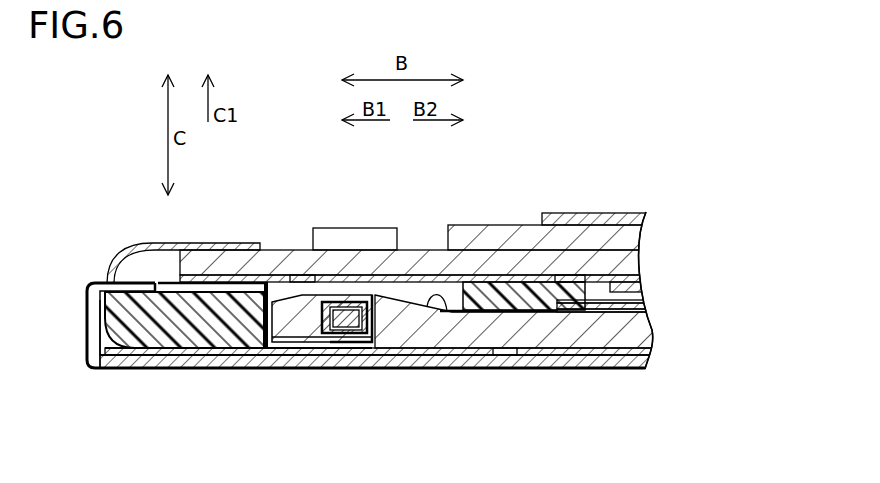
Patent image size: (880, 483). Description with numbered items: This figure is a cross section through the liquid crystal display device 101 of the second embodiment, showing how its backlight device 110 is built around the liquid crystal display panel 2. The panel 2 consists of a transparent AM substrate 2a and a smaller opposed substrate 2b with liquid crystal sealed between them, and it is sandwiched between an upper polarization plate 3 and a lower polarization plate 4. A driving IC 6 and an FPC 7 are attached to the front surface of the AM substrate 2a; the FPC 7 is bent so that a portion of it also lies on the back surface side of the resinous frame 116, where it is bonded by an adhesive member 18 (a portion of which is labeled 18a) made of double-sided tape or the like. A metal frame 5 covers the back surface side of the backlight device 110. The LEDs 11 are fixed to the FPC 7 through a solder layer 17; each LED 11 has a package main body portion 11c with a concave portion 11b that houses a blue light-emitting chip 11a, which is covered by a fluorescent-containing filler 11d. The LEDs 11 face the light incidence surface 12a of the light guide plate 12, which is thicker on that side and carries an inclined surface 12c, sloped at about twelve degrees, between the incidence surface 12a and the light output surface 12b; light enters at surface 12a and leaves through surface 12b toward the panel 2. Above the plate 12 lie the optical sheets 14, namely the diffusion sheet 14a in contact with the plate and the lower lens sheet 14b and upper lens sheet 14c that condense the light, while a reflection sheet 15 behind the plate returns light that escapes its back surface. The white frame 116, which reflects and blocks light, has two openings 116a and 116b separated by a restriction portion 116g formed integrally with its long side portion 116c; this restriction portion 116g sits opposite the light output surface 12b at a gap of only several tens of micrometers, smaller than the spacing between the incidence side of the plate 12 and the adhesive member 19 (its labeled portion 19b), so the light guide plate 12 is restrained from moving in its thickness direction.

The liquid crystal display device 101 is at (733, 113).
The backlight device 110 is at (747, 282).
The liquid crystal display panel 2 is at (447, 236).
The AM substrate 2a is at (630, 264).
The opposed substrate 2b is at (632, 241).
The upper polarization plate 3 is at (640, 220).
The lower polarization plate 4 is at (643, 281).
The metal frame 5 is at (586, 362).
The driving IC 6 is at (367, 240).
The FPC 7 is at (137, 252).
The LED 11 is at (339, 335).
The blue light-emitting chip 11a is at (340, 320).
The concave portion 11b is at (385, 297).
The package main body portion 11c is at (283, 337).
The filler 11d is at (355, 342).
The light guide plate 12 is at (398, 370).
The light incidence surface 12a is at (378, 346).
The light output surface 12b is at (450, 352).
The inclined surface 12c is at (437, 312).
The optical sheets 14 is at (654, 308).
The diffusion sheet 14a is at (650, 313).
The lower lens sheet 14b is at (650, 306).
The upper lens sheet 14c is at (648, 298).
The reflection sheet 15 is at (650, 362).
The solder layer 17 is at (356, 332).
The adhesive member 18 is at (373, 351).
The housing bottom portion 18a is at (189, 352).
The adhesive member 19 is at (420, 236).
The sheet member portion 19b is at (302, 275).
The frame 116 is at (188, 319).
The opening 116a is at (279, 296).
The opening 116b is at (560, 288).
The long side portion 116c is at (138, 318).
The restriction portion 116g is at (497, 298).